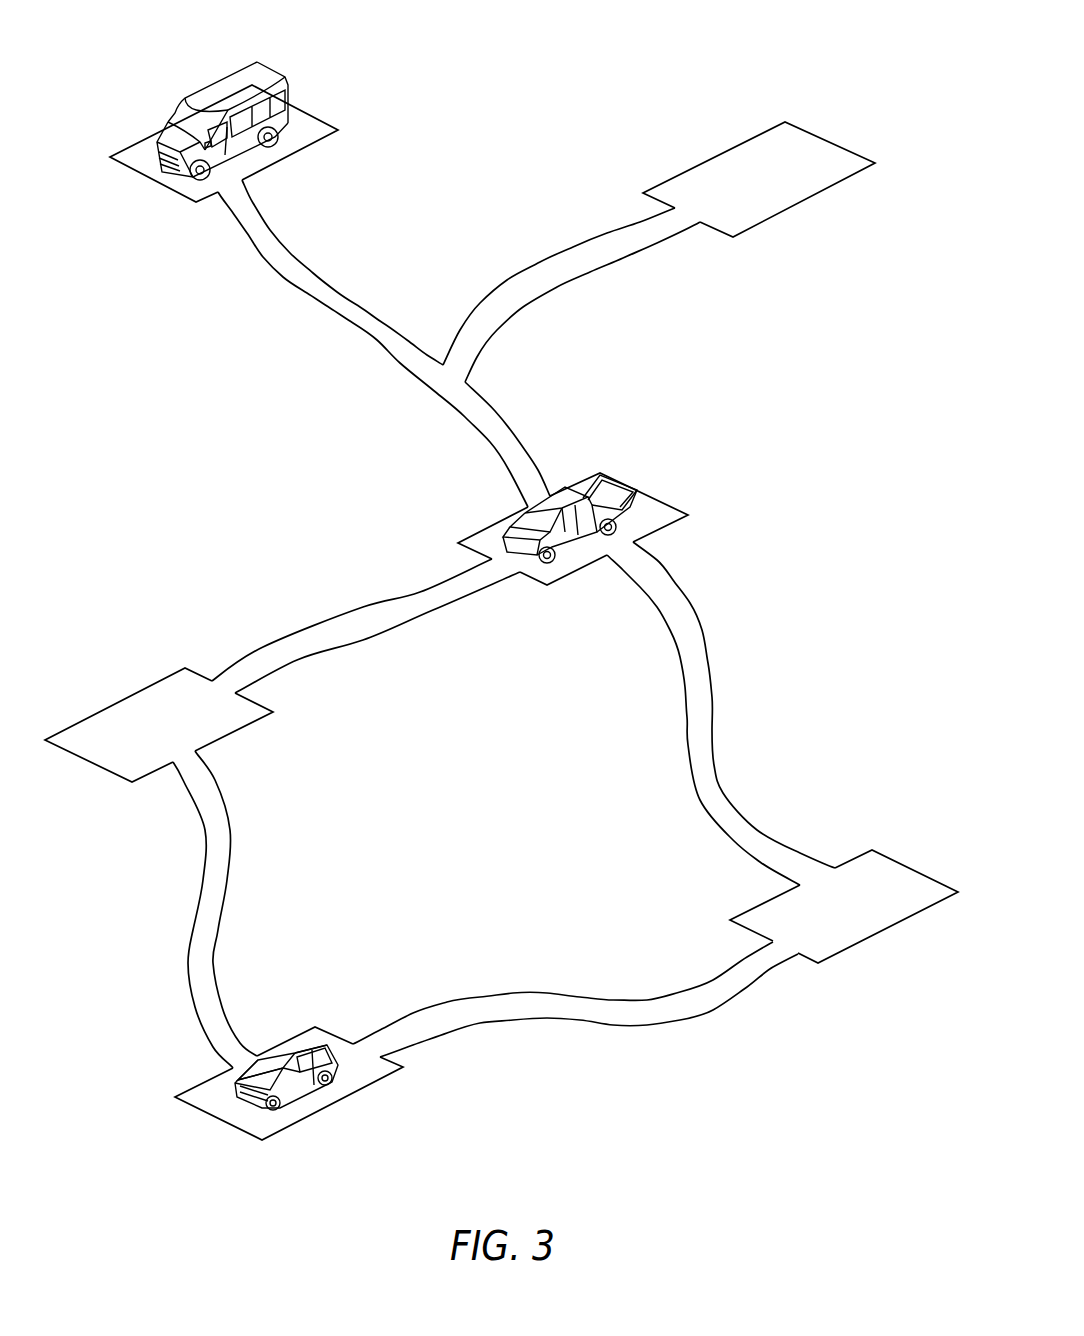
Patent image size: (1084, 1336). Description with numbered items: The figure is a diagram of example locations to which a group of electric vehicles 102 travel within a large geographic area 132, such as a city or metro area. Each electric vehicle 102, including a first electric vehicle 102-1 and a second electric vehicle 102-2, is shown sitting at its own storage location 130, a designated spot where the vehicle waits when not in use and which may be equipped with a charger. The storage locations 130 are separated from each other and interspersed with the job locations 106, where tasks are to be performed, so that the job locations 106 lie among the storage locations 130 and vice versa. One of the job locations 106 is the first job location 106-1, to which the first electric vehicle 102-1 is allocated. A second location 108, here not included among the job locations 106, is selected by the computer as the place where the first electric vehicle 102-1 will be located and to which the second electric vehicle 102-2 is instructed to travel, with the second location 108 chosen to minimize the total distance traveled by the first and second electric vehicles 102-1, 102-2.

The electric vehicle 102 is at (327, 1047).
The first electric vehicle 102-1 is at (287, 90).
The second electric vehicle 102-2 is at (627, 500).
The job location 106 is at (252, 722).
The first job location 106-1 is at (833, 185).
The second location 108 is at (448, 378).
The storage location 130 is at (170, 188).
The geographic area 132 is at (442, 236).